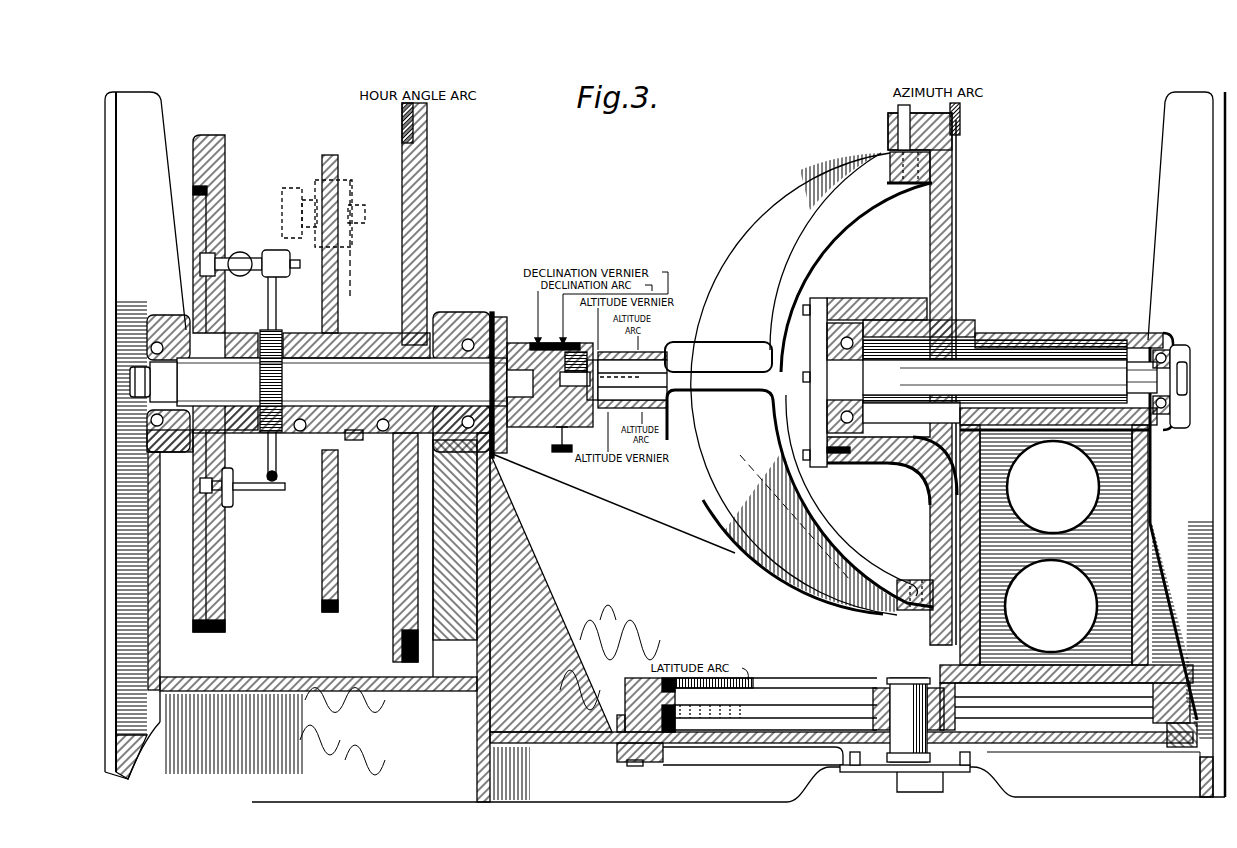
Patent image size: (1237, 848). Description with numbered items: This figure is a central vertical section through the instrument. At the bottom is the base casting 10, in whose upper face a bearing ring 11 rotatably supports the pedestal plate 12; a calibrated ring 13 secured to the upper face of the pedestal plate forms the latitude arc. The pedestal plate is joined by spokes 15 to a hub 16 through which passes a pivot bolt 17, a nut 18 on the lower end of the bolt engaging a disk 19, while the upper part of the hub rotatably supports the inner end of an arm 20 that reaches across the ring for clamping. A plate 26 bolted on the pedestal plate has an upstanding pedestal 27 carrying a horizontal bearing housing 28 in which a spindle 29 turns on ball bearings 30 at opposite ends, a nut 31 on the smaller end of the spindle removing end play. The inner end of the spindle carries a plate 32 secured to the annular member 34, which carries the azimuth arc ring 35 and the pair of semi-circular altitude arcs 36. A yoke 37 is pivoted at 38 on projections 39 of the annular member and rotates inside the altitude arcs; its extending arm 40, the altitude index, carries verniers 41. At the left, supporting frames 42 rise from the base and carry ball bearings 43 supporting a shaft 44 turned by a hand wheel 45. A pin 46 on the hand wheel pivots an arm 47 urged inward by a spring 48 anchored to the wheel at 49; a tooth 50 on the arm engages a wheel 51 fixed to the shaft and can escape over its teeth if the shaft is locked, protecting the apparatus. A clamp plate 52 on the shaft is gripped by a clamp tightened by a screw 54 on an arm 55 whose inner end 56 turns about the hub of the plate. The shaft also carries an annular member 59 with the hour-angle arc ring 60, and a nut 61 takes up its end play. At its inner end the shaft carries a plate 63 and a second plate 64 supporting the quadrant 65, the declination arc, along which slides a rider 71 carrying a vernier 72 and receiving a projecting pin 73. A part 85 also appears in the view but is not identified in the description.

The base casting 10 is at (453, 803).
The bearing ring 11 is at (612, 766).
The pedestal plate 12 is at (625, 697).
The ring 13 is at (758, 676).
The spokes 15 is at (775, 712).
The hub 16 is at (870, 702).
The pivot bolt 17 is at (900, 698).
The nut 18 is at (888, 795).
The disk 19 is at (870, 778).
The arm 20 is at (955, 700).
The plate 26 is at (1068, 667).
The pedestal 27 is at (1090, 492).
The bearing housing 28 is at (1040, 336).
The spindle 29 is at (1080, 370).
The ball bearings 30 is at (1170, 408).
The nut 31 is at (1185, 365).
The plate 32 is at (824, 348).
The annular member 34 is at (953, 220).
The ring 35 is at (958, 120).
The semi-circular members 36 is at (665, 343).
The yoke 37 is at (772, 197).
The pivots 38 is at (897, 112).
The projections 39 is at (888, 125).
The arm 40 is at (675, 362).
The verniers 41 is at (600, 432).
The supporting frames 42 is at (175, 662).
The ball bearings 43 is at (158, 320).
The shaft 44 is at (328, 382).
The hand wheel 45 is at (228, 152).
The pin 46 is at (283, 265).
The arm 47 is at (278, 300).
The spring 48 is at (279, 475).
The spring connection 49 is at (282, 487).
The tooth 50 is at (863, 416).
The wheel 51 is at (282, 331).
The clamp plate 52 is at (330, 153).
The screw 54 is at (283, 203).
The arm 55 is at (356, 252).
The inner end of arm 56 is at (350, 445).
The annular member 59 is at (430, 200).
The ring 60 is at (400, 132).
The nut 61 is at (125, 378).
The plate 63 is at (490, 312).
The second plate 64 is at (512, 317).
The quadrant 65 is at (545, 343).
The rider 71 is at (592, 358).
The vernier 72 is at (572, 350).
The projecting pin 73 is at (556, 433).
The frame 85 is at (152, 140).